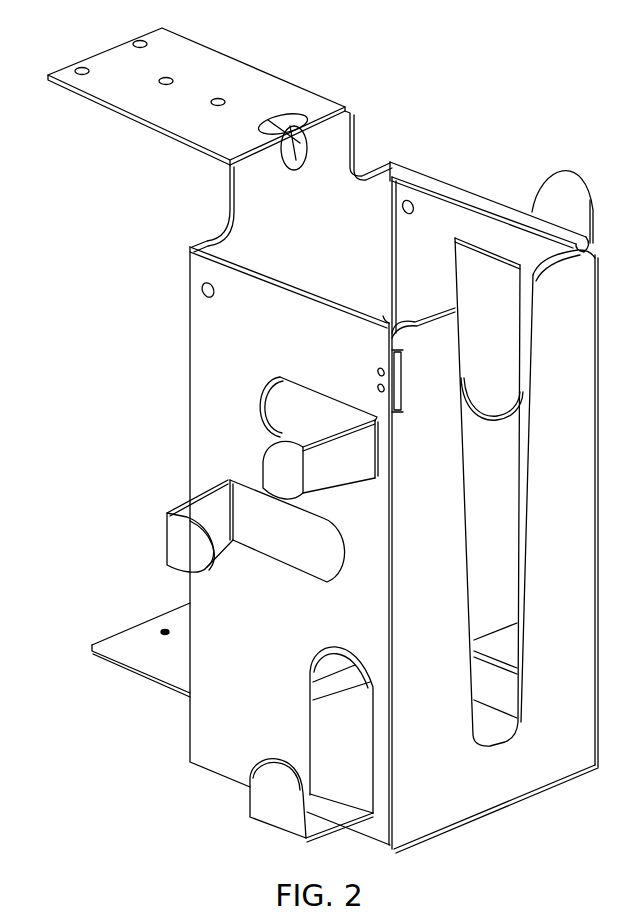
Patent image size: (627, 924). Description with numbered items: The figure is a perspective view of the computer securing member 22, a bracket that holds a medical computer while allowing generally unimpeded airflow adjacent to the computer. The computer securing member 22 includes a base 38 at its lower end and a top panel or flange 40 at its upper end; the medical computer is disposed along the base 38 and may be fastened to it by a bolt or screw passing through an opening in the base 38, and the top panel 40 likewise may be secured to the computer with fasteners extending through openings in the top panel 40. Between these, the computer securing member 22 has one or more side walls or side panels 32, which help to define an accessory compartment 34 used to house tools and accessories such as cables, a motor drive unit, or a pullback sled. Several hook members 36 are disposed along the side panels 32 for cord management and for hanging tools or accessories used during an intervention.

The computer securing member 22 is at (397, 115).
The side panel 32 is at (213, 371).
The accessory compartment 34 is at (417, 272).
The hook member 36 is at (280, 458).
The base 38 is at (120, 643).
The top panel 40 is at (218, 75).